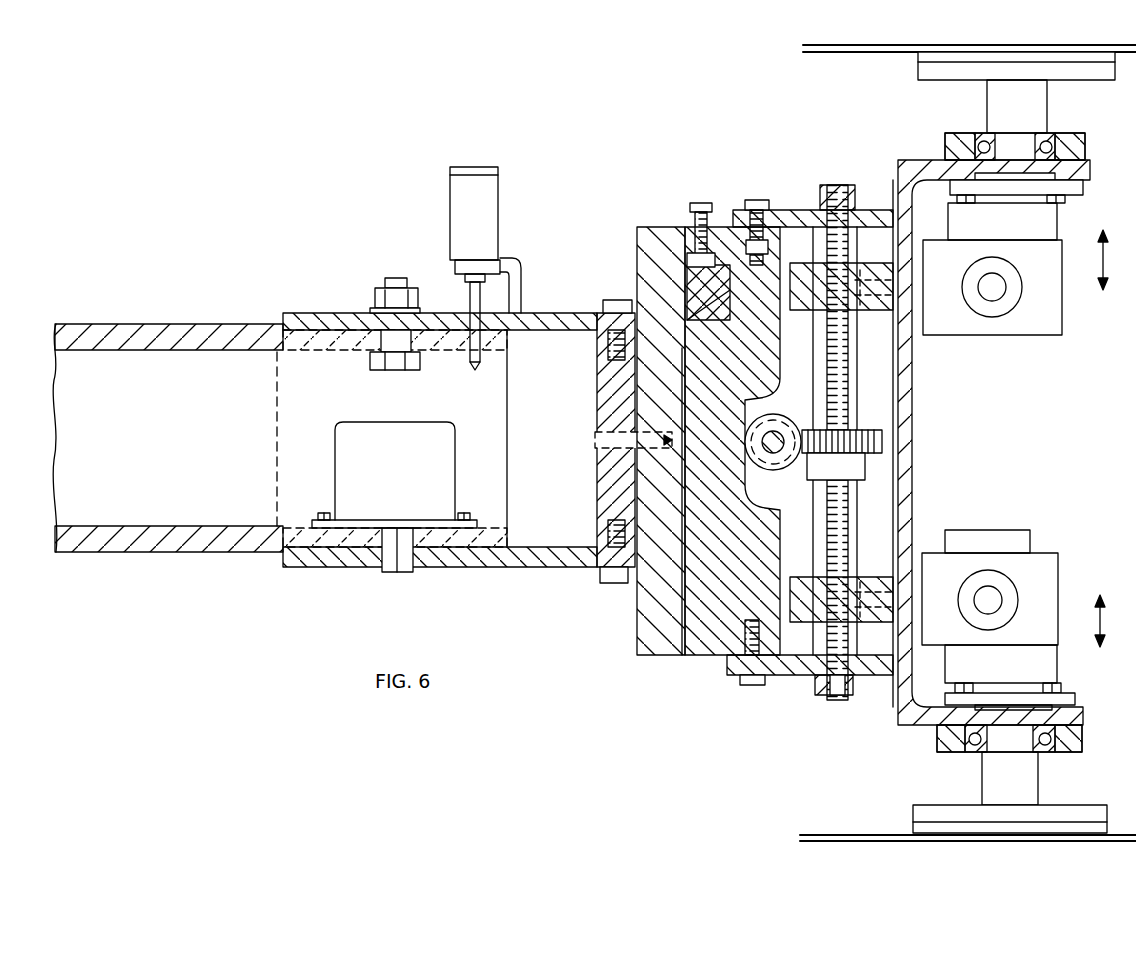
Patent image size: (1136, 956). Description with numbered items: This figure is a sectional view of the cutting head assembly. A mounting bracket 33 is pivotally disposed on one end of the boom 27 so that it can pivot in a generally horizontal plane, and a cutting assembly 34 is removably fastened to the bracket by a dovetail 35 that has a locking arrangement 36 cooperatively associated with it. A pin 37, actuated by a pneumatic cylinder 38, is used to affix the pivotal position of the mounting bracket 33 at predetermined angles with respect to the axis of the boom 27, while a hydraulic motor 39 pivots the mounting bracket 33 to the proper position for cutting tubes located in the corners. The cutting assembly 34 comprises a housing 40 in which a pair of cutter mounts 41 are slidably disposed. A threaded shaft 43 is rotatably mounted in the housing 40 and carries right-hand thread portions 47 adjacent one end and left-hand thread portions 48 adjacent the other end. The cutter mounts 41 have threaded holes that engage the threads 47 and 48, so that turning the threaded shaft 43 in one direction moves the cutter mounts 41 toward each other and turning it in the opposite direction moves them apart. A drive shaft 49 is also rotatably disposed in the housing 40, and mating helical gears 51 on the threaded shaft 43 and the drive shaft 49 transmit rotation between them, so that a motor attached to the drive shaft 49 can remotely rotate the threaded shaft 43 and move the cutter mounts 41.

The boom 27 is at (170, 324).
The mounting bracket 33 is at (640, 262).
The cutting assembly 34 is at (894, 427).
The dovetail 35 is at (728, 655).
The locking arrangement 36 is at (692, 203).
The pin 37 is at (466, 296).
The pneumatic cylinder 38 is at (488, 216).
The hydraulic motor 39 is at (345, 432).
The housing 40 is at (800, 212).
The cutter mounts 41 is at (890, 300).
The threaded shaft 43 is at (848, 426).
The right-hand thread portions 47 is at (848, 351).
The left-hand thread portions 48 is at (848, 536).
The drive shaft 49 is at (768, 455).
The helical gears 51 is at (797, 428).